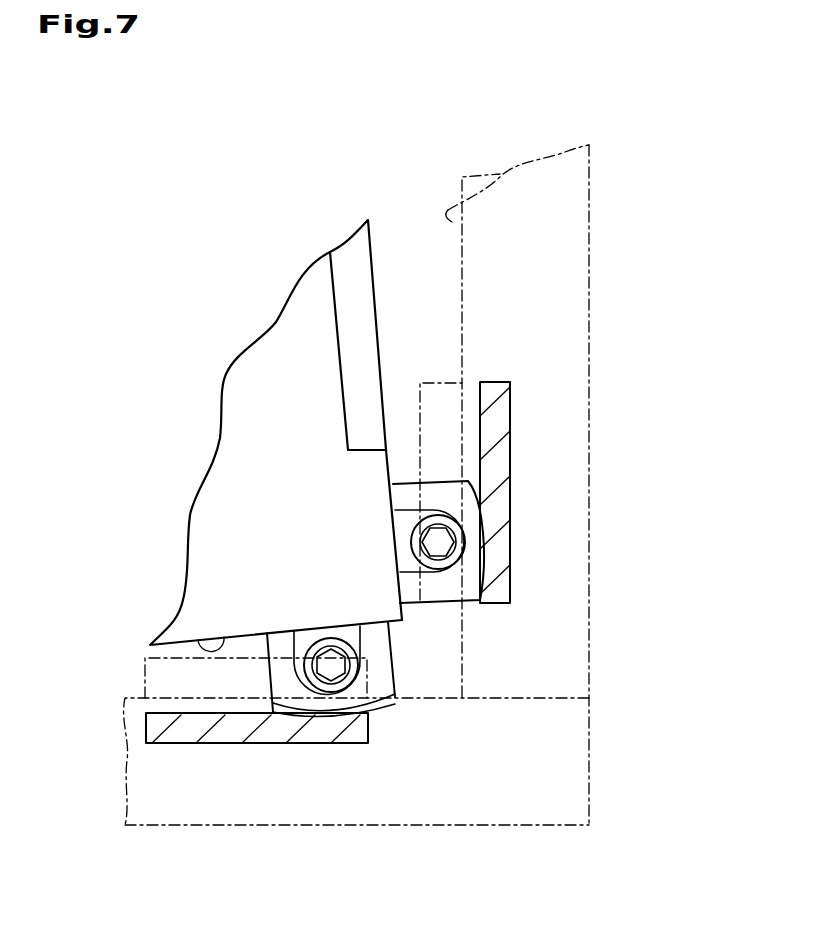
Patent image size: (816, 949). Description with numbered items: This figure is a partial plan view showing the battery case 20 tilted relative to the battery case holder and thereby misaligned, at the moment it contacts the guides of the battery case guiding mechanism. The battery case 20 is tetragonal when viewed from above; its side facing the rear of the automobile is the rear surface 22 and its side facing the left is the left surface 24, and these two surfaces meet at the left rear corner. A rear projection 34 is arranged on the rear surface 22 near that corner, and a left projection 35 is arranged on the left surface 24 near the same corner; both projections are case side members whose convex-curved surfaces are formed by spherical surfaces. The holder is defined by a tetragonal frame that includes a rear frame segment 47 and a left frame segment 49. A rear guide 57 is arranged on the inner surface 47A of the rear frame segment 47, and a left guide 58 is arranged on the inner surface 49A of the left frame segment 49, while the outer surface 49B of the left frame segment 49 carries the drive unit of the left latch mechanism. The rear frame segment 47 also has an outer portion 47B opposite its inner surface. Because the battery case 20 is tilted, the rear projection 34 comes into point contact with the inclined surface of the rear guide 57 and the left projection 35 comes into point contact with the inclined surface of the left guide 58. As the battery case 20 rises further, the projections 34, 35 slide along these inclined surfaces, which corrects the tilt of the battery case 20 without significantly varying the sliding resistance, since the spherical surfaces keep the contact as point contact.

The battery case 20 is at (377, 275).
The rear surface 22 is at (381, 318).
The left surface 24 is at (197, 640).
The rear projection 34 is at (442, 604).
The left projection 35 is at (383, 708).
The rear frame segment 47 is at (550, 306).
The inner surface of the rear frame segment 47A is at (500, 172).
The side wall mounting portion 47B is at (589, 343).
The left frame segment 49 is at (500, 797).
The inner surface of the left frame segment 49A is at (178, 698).
The outer surface of the left frame segment 49B is at (448, 825).
The rear guide 57 is at (512, 515).
The left guide 58 is at (267, 748).